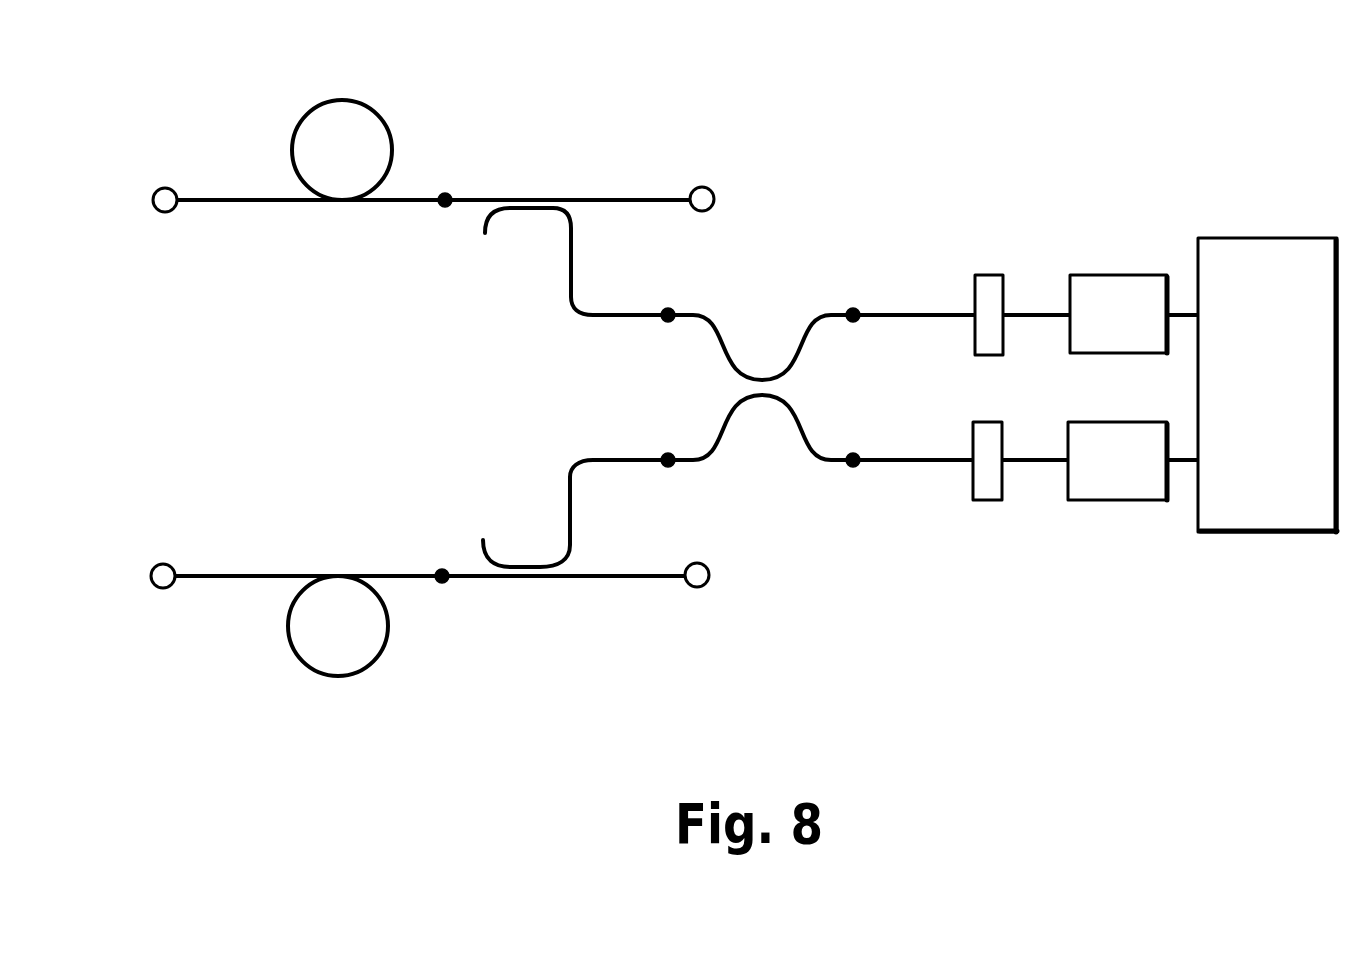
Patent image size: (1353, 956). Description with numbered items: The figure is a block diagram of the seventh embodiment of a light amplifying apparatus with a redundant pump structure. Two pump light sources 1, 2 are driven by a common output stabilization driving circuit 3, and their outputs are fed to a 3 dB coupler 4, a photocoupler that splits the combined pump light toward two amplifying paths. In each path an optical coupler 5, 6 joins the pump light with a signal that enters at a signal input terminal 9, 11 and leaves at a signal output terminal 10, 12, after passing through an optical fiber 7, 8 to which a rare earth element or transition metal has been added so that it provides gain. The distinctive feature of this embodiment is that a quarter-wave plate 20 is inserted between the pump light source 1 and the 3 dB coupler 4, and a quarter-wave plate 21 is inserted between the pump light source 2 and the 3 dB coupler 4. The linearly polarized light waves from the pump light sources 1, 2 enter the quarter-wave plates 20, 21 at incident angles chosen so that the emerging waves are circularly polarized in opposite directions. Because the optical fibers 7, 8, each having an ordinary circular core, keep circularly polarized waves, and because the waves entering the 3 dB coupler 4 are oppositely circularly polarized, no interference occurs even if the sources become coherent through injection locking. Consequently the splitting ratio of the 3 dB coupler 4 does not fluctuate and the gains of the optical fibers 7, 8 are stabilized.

The pump light source 1 is at (1100, 273).
The pump light source 2 is at (1117, 502).
The output stabilization driving circuit 3 is at (1247, 237).
The 3 dB coupler 4 is at (715, 322).
The optical coupler 5 is at (515, 198).
The optical coupler 6 is at (555, 578).
The optical fiber 7 is at (343, 100).
The optical fiber 8 is at (320, 672).
The signal input terminal 9 is at (168, 190).
The signal output terminal 10 is at (703, 187).
The signal input terminal 11 is at (168, 565).
The signal output terminal 12 is at (692, 587).
The quarter-wave plate 20 is at (988, 273).
The quarter-wave plate 21 is at (990, 502).